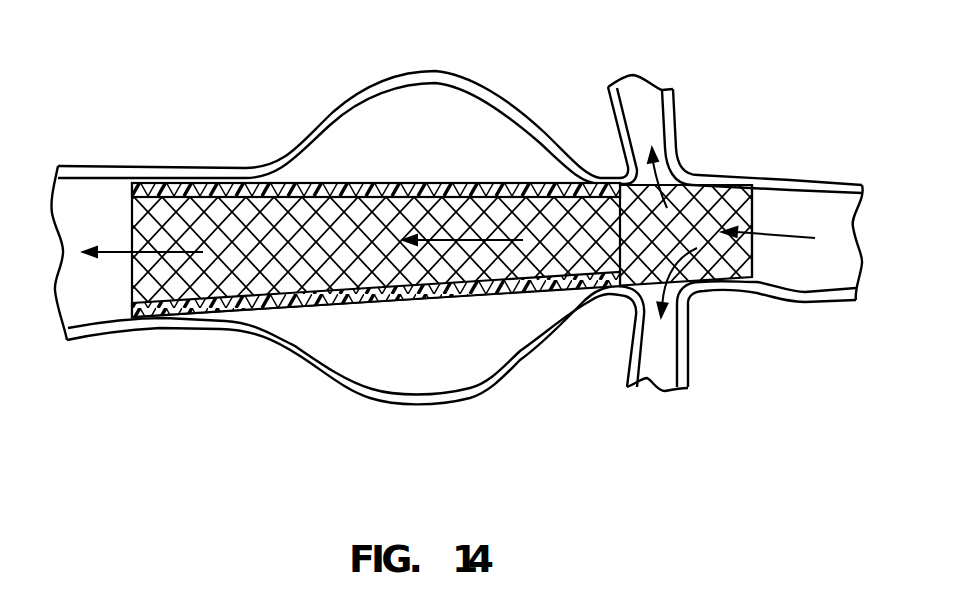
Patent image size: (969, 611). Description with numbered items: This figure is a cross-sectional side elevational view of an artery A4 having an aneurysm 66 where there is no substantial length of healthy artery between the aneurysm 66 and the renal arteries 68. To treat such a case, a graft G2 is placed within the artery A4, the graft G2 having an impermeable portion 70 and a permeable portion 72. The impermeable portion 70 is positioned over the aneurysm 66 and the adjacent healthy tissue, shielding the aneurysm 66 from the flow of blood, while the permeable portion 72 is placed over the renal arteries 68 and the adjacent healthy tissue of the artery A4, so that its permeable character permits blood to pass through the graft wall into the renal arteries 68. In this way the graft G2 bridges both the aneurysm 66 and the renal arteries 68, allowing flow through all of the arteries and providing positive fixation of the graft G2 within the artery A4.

The aneurysm 66 is at (400, 402).
The renal arteries 68 is at (677, 117).
The impermeable portion 70 is at (433, 300).
The permeable portion 72 is at (735, 185).
The artery A4 is at (262, 165).
The graft G2 is at (396, 170).